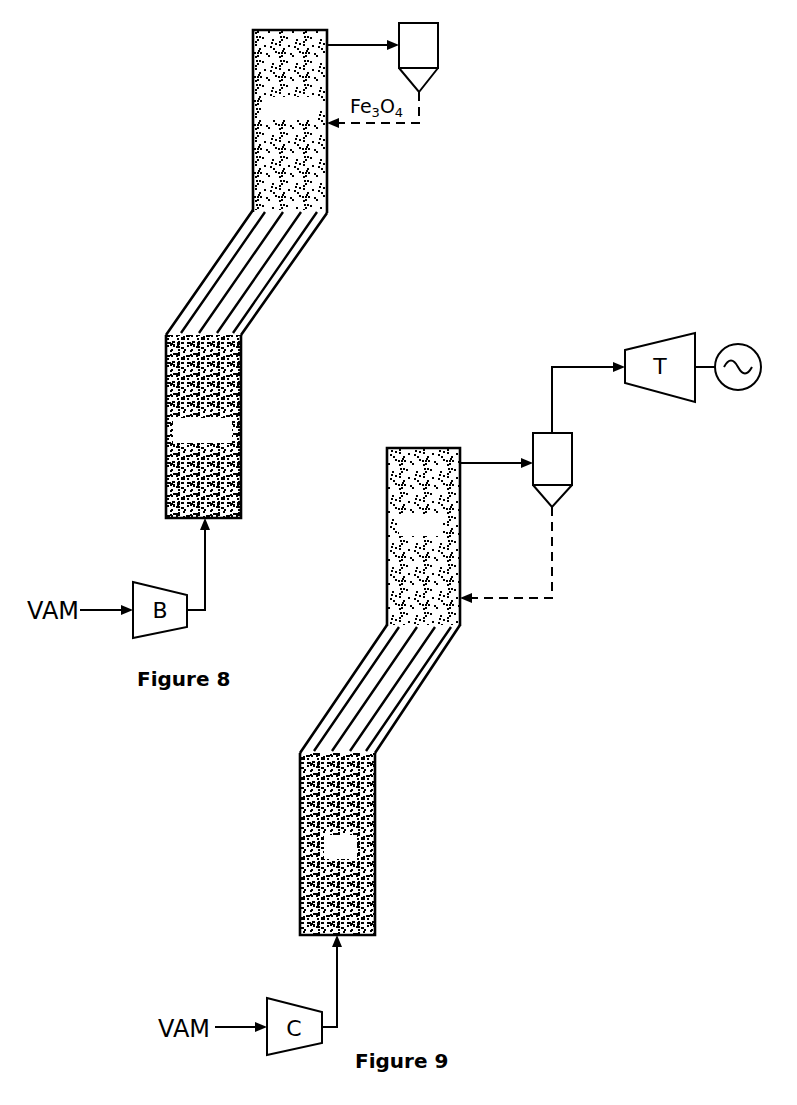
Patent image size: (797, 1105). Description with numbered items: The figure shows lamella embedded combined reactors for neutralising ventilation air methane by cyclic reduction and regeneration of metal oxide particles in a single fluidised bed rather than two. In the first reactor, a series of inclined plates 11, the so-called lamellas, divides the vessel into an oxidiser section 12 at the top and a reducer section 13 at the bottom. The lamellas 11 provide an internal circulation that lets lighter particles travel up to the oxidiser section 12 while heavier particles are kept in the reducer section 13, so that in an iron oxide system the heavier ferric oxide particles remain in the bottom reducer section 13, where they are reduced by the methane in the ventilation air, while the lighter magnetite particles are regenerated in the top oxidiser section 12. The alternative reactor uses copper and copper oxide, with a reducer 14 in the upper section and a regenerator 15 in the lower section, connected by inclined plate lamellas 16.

In FIG. 8, the inclined plates (lamellas) 11 is at (215, 267).
In FIG. 8, the oxidiser section 12 is at (253, 123).
In FIG. 8, the reducer section 13 is at (168, 392).
In FIG. 9, the reducer 14 is at (387, 515).
In FIG. 9, the regenerator 15 is at (300, 844).
In FIG. 9, the inclined plate lamellas 16 is at (355, 685).